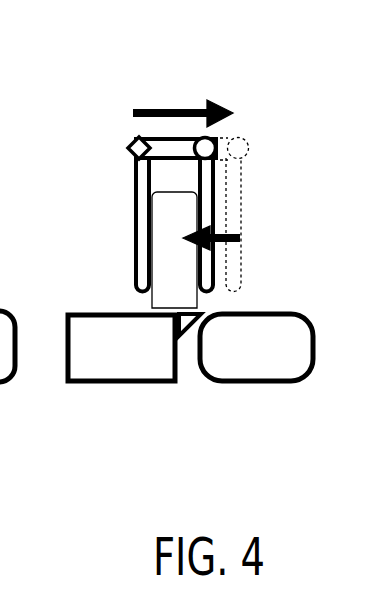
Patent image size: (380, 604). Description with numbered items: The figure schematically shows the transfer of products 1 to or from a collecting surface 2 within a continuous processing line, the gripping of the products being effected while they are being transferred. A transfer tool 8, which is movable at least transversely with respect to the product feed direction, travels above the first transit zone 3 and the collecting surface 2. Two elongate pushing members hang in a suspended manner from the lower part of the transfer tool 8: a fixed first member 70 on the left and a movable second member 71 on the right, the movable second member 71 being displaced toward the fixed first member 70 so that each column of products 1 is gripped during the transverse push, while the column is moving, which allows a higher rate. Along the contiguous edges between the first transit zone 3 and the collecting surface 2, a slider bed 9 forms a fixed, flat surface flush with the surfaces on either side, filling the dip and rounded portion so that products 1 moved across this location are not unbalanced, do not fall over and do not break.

The product 1 is at (172, 210).
The collecting surface 2 is at (272, 383).
The first transit zone 3 is at (110, 383).
The transfer tool 8 is at (129, 123).
The slider bed 9 is at (188, 342).
The fixed first member 70 is at (140, 222).
The movable second member 71 is at (208, 200).